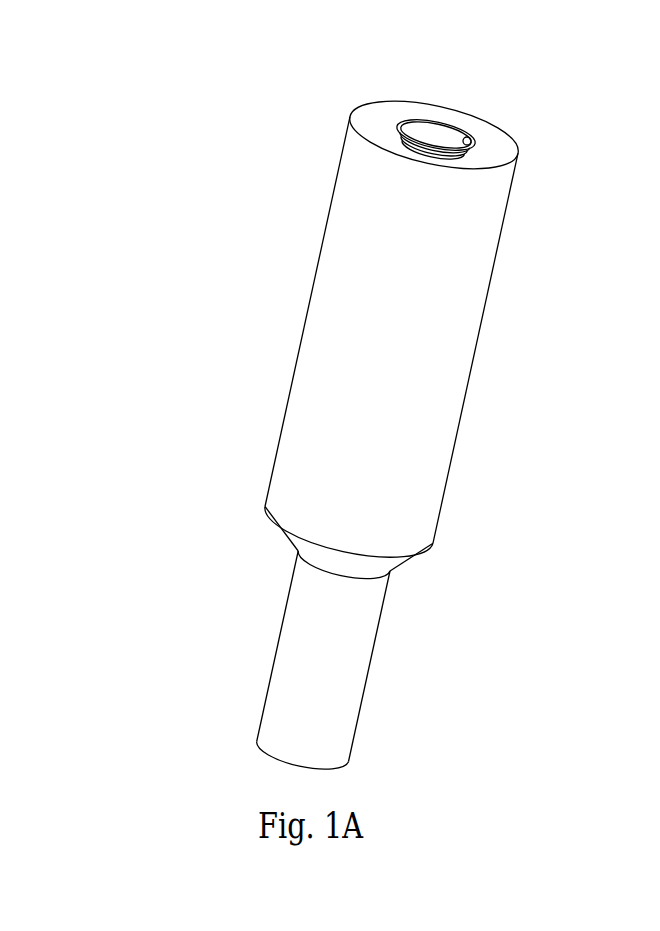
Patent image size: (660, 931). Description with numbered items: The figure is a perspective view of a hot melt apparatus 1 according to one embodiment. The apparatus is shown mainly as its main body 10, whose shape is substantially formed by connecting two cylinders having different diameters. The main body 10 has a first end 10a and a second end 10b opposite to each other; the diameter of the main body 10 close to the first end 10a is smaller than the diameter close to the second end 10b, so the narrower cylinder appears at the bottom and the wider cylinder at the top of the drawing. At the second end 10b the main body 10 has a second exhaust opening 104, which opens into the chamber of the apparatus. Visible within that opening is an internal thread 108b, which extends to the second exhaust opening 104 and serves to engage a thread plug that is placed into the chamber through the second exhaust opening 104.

The hot melt apparatus 1 is at (364, 429).
The main body 10 is at (382, 429).
The first end 10a is at (266, 778).
The second end 10b is at (458, 114).
The second exhaust opening 104 is at (458, 108).
The internal thread 108b is at (462, 136).